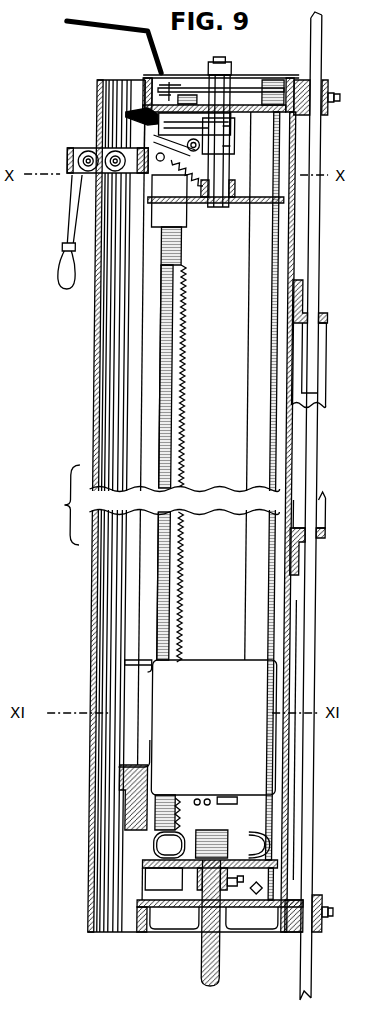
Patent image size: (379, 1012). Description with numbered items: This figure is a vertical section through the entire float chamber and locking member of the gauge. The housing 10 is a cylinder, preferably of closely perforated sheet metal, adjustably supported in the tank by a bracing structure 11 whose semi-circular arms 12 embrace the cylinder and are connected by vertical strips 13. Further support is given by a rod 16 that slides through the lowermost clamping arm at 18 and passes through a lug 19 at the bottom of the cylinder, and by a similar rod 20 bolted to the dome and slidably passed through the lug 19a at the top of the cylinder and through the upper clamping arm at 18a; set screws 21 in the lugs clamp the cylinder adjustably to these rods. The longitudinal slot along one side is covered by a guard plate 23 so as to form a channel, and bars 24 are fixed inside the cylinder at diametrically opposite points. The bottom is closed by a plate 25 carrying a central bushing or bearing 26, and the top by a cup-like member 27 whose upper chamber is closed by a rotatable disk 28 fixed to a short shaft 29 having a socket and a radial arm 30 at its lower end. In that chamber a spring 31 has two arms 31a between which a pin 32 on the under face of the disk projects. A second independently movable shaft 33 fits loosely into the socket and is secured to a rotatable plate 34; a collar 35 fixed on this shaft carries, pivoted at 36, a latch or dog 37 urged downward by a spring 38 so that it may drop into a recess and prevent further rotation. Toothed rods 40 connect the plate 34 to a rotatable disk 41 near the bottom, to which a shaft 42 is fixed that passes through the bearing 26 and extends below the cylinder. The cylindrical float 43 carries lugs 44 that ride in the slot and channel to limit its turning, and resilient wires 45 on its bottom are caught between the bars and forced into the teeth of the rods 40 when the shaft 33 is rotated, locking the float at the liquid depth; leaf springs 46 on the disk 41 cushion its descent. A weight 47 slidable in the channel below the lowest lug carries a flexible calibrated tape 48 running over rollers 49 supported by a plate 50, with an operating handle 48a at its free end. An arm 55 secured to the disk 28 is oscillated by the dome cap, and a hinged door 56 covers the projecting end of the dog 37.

The housing 10 is at (295, 453).
The bracing structure 11 is at (330, 330).
The semi-circular arms 12 is at (308, 568).
The vertical strips 13 is at (328, 503).
The rod 16 is at (322, 800).
The sliding point of rod through lower arm 18 is at (326, 533).
The sliding point of rod through upper arm 18a is at (322, 320).
The lug 19 is at (327, 893).
The lug 19a is at (326, 85).
The rod 20 is at (318, 249).
The set screws 21 is at (341, 917).
The guard plate 23 is at (99, 805).
The bars 24 is at (252, 428).
The plate 25 is at (183, 910).
The bushing or bearing 26 is at (238, 917).
The cup-like member 27 is at (144, 80).
The rotatable disk 28 is at (254, 76).
The short shaft 29 is at (228, 74).
The radial arm 30 is at (126, 113).
The spring 31 is at (288, 80).
The arms or extensions 31a is at (184, 88).
The pin 32 is at (164, 82).
The second independently movable shaft 33 is at (232, 200).
The rotatable plate 34 is at (266, 203).
The collar 35 is at (236, 146).
The pivot 36 is at (196, 152).
The latch or dog 37 is at (140, 120).
The spring 38 is at (180, 217).
The serrated or toothed rods 40 is at (185, 405).
The rotatable disk 41 is at (160, 872).
The shaft 42 is at (211, 965).
The cylindrical float 43 is at (213, 727).
The projecting lugs or ears 44 is at (141, 762).
The resilient wires 45 is at (247, 797).
The leaf springs 46 is at (262, 832).
The weight 47 is at (134, 822).
The flexible calibrated tape 48 is at (126, 600).
The operating handle 48a is at (62, 273).
The rollers 49 is at (99, 182).
The plate 50 is at (69, 170).
The arm 55 is at (82, 28).
The door 56 is at (100, 88).